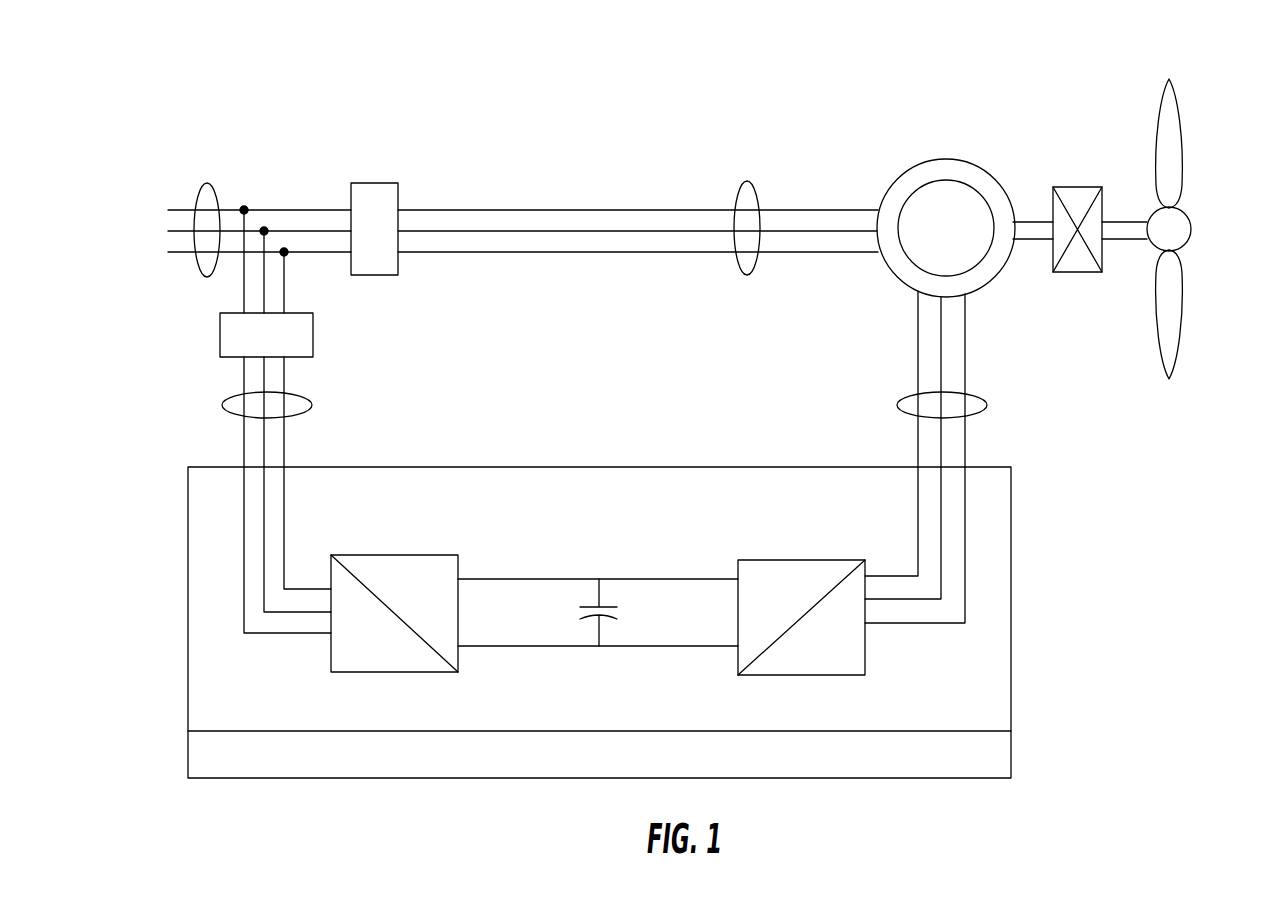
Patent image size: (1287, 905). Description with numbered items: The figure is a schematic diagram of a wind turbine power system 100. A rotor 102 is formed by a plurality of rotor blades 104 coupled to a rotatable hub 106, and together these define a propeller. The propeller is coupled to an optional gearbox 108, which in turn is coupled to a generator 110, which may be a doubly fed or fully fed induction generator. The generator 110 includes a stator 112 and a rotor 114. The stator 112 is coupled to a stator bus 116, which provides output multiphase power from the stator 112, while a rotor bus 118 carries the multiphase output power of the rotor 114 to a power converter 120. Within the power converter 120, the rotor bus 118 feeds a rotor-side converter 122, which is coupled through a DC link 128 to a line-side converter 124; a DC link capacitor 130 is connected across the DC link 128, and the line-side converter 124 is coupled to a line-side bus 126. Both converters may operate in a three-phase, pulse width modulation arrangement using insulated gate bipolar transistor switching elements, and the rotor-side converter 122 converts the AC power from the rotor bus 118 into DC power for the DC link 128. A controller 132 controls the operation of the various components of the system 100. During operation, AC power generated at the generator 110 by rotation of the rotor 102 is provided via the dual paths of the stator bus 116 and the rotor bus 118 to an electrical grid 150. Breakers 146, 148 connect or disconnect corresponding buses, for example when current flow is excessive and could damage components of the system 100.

The wind turbine power system 100 is at (563, 104).
The rotor 102 is at (1200, 209).
The rotor blades 104 is at (1182, 153).
The rotatable hub 106 is at (1192, 222).
The gearbox 108 is at (1085, 187).
The generator 110 is at (926, 202).
The stator 112 is at (905, 178).
The rotor 114 is at (905, 260).
The stator bus 116 is at (747, 180).
The rotor bus 118 is at (988, 405).
The power converter 120 is at (1012, 560).
The rotor-side converter 122 is at (868, 650).
The line-side converter 124 is at (352, 673).
The line-side bus 126 is at (222, 400).
The DC link 128 is at (623, 579).
The DC link capacitor 130 is at (592, 607).
The controller 132 is at (521, 780).
The breaker 146 is at (373, 183).
The breaker 148 is at (220, 330).
The electrical grid 150 is at (207, 182).